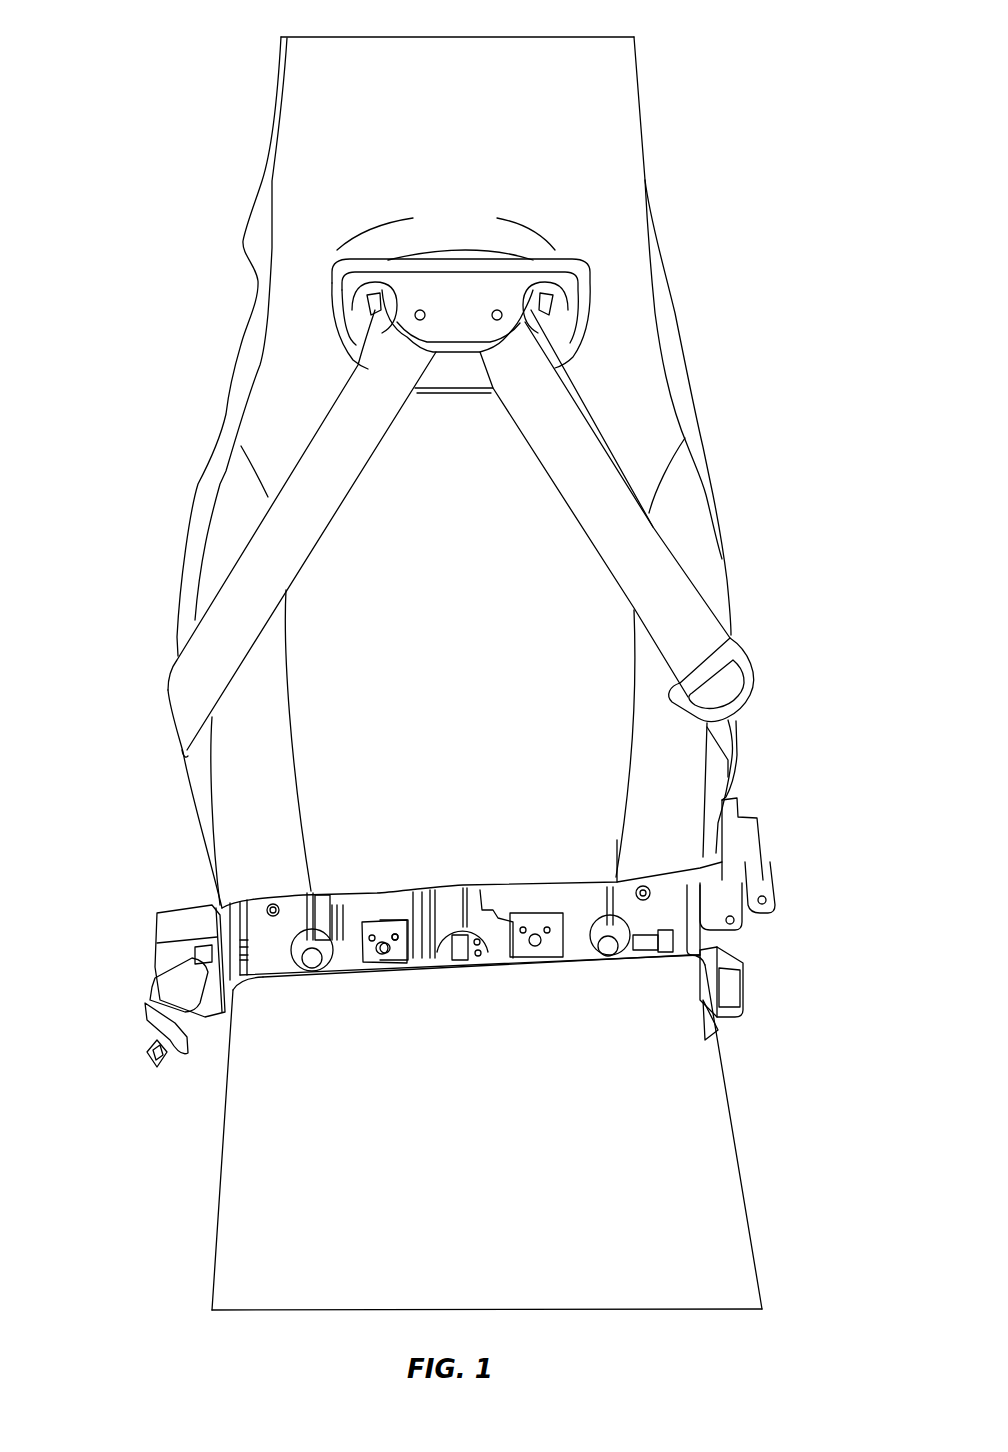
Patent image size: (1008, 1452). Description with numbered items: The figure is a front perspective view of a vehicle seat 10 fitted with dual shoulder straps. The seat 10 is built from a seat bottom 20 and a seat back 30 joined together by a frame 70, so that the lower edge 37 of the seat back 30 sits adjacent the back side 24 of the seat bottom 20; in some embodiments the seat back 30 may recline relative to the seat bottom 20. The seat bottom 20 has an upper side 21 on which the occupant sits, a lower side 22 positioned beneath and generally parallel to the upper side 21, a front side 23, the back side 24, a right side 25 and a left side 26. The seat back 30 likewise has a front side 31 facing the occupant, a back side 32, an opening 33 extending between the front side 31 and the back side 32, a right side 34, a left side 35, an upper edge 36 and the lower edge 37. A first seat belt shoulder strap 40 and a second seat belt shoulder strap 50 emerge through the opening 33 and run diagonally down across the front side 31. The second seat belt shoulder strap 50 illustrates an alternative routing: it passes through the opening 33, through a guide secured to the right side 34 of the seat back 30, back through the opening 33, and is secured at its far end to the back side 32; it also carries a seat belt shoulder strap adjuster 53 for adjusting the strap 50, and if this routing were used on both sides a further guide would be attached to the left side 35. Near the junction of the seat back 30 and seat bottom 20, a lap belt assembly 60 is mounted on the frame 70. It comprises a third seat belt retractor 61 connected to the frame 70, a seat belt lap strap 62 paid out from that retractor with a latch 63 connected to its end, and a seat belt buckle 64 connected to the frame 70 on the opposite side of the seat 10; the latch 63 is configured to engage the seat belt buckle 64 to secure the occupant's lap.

The vehicle seat 10 is at (738, 340).
The seat bottom 20 is at (775, 1102).
The upper side 21 is at (473, 1147).
The lower side 22 is at (749, 1212).
The front side 23 is at (600, 1298).
The back side 24 is at (560, 937).
The right side 25 is at (740, 1170).
The left side 26 is at (223, 1150).
The seat back 30 is at (775, 409).
The front side 31 is at (449, 652).
The back side 32 is at (666, 255).
The opening 33 is at (371, 313).
The right side 34 is at (730, 600).
The left side 35 is at (232, 409).
The upper edge 36 is at (564, 37).
The lower edge 37 is at (357, 970).
The first seat belt shoulder strap 40 is at (241, 546).
The second seat belt shoulder strap 50 is at (658, 520).
The seat belt shoulder strap adjuster 53 is at (762, 673).
The lap belt assembly 60 is at (151, 906).
The third seat belt retractor 61 is at (155, 953).
The seat belt lap strap 62 is at (148, 1020).
The latch 63 is at (147, 1063).
The seat belt buckle 64 is at (743, 987).
The frame 70 is at (571, 902).